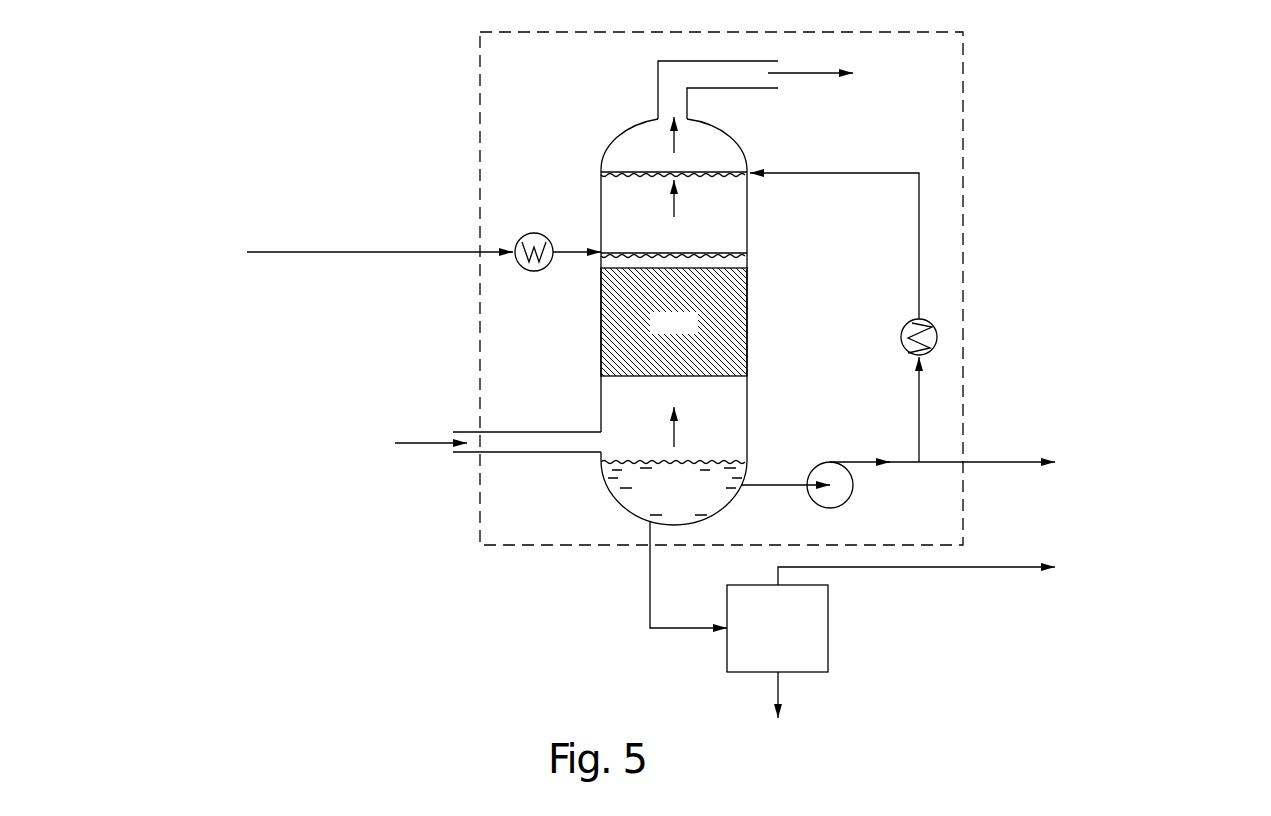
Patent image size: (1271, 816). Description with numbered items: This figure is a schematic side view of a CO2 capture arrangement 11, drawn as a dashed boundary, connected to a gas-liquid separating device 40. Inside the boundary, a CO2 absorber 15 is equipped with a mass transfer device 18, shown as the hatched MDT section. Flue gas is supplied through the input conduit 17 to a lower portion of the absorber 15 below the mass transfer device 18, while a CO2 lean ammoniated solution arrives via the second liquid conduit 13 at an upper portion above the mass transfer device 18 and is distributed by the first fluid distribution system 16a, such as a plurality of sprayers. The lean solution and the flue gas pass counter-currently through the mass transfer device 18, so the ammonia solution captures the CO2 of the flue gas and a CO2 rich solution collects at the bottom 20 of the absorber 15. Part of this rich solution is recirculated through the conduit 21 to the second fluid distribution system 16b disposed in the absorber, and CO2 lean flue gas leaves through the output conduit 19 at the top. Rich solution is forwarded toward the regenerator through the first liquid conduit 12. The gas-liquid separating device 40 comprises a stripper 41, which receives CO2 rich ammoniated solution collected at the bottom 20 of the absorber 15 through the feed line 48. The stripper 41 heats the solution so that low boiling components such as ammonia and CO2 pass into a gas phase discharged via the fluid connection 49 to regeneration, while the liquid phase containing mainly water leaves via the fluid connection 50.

The CO2 capture arrangement 11 is at (480, 93).
The first liquid conduit 12 is at (988, 462).
The second liquid conduit 13 is at (462, 251).
The CO2 absorber 15 is at (622, 135).
The first fluid distribution system 16a is at (618, 255).
The second fluid distribution system 16b is at (718, 176).
The input conduit 17 is at (565, 455).
The mass transfer device 18 is at (748, 320).
The output conduit 19 is at (723, 90).
The bottom of the absorber 20 is at (612, 485).
The conduit 21 is at (918, 210).
The gas-liquid separating device 40 is at (710, 655).
The stripper 41 is at (828, 630).
The rich solution feed line to stripper 48 is at (650, 578).
The fluid connection 49 is at (880, 568).
The fluid connection 50 is at (778, 686).